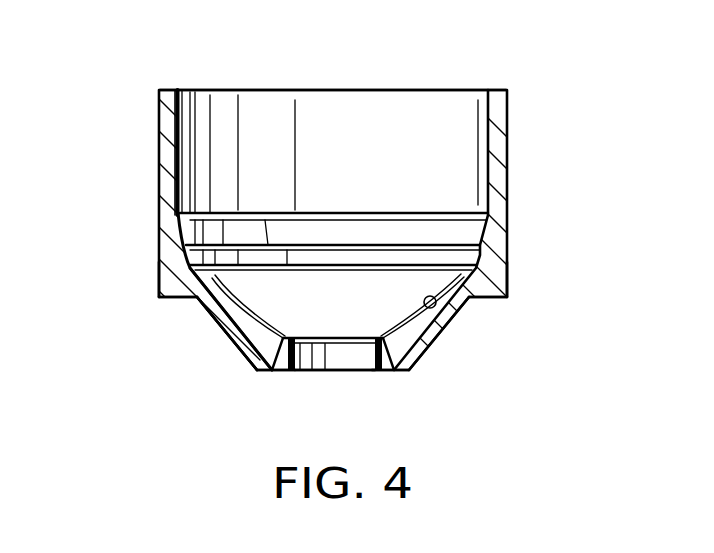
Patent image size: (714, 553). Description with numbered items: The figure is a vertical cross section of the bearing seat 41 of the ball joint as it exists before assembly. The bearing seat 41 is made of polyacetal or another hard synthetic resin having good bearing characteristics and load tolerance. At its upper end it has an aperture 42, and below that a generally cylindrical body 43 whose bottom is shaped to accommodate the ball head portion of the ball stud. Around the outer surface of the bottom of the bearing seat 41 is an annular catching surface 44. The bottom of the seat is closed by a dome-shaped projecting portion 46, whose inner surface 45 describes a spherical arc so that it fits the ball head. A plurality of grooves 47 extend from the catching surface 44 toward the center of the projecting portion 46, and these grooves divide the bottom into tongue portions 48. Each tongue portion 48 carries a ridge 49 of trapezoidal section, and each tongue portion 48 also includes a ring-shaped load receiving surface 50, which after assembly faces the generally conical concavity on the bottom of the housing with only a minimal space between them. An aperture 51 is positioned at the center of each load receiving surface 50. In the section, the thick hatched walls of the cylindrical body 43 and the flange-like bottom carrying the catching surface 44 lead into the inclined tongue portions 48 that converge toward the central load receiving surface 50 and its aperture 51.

The bearing seat 41 is at (508, 197).
The aperture 42 is at (365, 90).
The generally cylindrical body 43 is at (159, 190).
The catching surface 44 is at (172, 300).
The inner surface 45 is at (455, 313).
The projecting portion 46 is at (242, 347).
The grooves 47 is at (223, 310).
The tongue portions 48 is at (160, 272).
The ridge 49 is at (197, 307).
The load receiving surface 50 is at (274, 372).
The aperture 51 is at (340, 360).